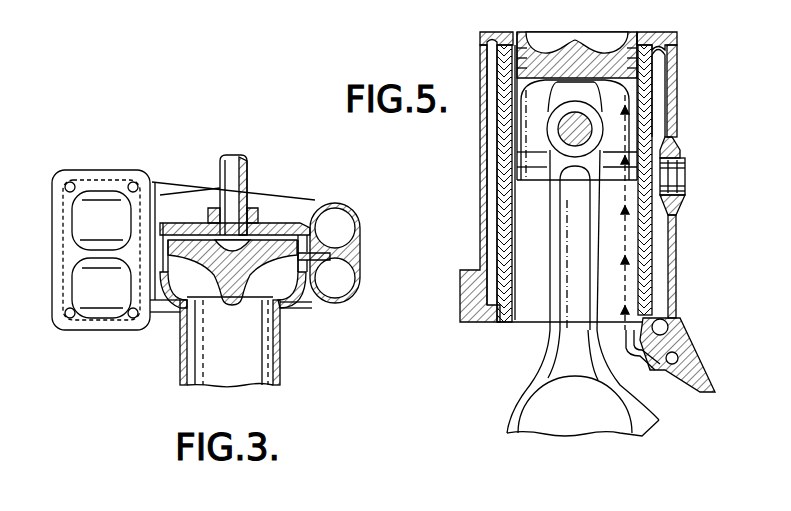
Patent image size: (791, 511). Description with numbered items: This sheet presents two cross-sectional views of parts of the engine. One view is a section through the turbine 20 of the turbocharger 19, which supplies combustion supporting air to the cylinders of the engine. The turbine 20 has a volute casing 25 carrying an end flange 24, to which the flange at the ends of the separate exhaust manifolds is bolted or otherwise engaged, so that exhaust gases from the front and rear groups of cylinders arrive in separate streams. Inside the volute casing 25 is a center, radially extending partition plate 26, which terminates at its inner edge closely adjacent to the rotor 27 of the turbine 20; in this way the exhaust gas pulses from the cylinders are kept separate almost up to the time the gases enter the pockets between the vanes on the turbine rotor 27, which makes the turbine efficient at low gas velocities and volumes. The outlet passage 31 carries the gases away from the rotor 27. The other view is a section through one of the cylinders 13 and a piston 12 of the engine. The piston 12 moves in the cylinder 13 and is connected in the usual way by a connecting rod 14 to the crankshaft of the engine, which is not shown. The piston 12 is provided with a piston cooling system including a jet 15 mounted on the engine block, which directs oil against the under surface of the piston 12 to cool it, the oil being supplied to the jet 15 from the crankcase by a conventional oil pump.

In FIG. 5, the piston 12 is at (645, 135).
In FIG. 5, the cylinder 13 is at (650, 240).
In FIG. 5, the connecting rod 14 is at (572, 260).
In FIG. 5, the jet 15 is at (630, 340).
In FIG. 3, the turbocharger 19 is at (145, 348).
In FIG. 3, the turbine 20 is at (345, 241).
In FIG. 3, the end flange 24 is at (100, 176).
In FIG. 3, the volute casing 25 is at (287, 205).
In FIG. 3, the partition plate 26 is at (313, 257).
In FIG. 3, the rotor 27 is at (181, 252).
In FIG. 3, the outlet pipe 31 is at (257, 360).